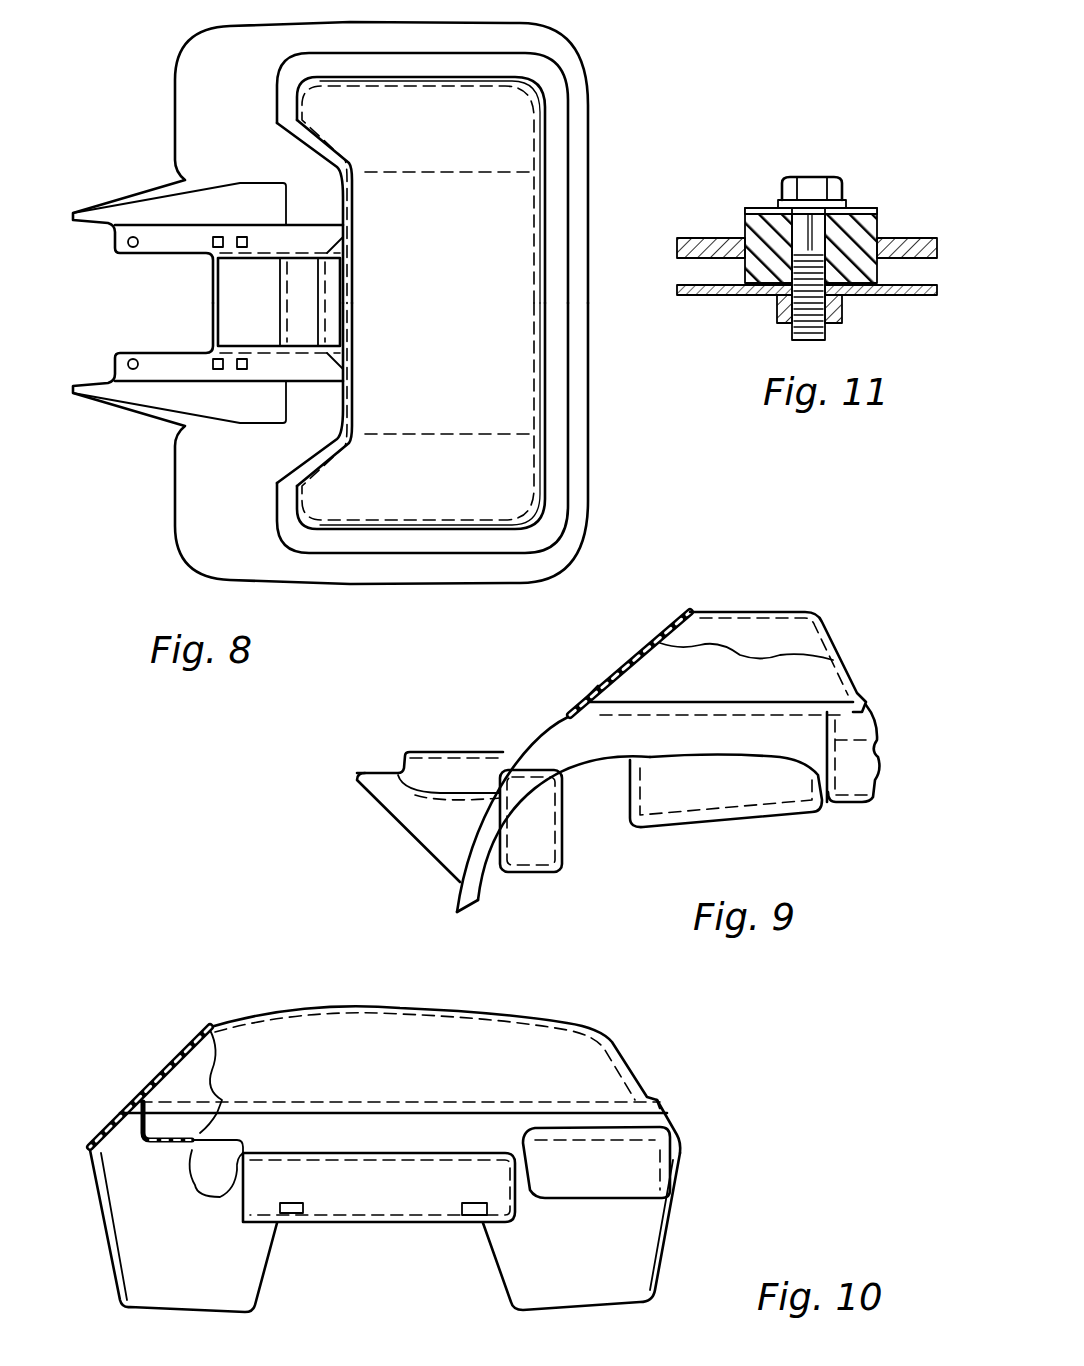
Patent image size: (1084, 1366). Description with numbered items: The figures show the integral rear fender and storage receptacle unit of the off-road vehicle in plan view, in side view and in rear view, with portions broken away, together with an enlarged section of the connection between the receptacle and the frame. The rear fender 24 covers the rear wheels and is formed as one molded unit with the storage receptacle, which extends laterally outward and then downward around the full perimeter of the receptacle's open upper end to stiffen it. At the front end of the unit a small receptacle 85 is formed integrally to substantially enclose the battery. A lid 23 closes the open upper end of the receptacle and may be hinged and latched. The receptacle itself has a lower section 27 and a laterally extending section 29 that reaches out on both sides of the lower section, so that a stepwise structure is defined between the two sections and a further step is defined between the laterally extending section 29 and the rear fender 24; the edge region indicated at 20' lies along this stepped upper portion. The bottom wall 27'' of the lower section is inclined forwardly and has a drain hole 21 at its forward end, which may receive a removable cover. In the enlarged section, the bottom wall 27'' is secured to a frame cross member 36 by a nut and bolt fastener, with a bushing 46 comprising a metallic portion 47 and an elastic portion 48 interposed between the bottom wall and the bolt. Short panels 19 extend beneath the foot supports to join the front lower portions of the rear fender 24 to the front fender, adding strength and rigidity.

In FIG. 10, the short panel 19 is at (145, 1070).
In FIG. 9, the lip of cover 20' is at (870, 724).
In FIG. 10, the drain hole 21 is at (290, 1214).
In FIG. 9, the lid 23 is at (747, 612).
In FIG. 10, the lid 23 is at (303, 1010).
In FIG. 8, the rear fender 24 is at (583, 98).
In FIG. 9, the rear fender 24 is at (877, 760).
In FIG. 10, the rear fender 24 is at (665, 1232).
In FIG. 9, the lower section 27 is at (726, 813).
In FIG. 10, the lower section 27 is at (385, 1207).
In FIG. 11, the bottom wall 27'' is at (805, 216).
In FIG. 9, the bottom wall 27'' is at (605, 762).
In FIG. 10, the bottom wall 27'' is at (379, 1217).
In FIG. 10, the laterally extending section 29 is at (567, 1142).
In FIG. 11, the mounting plate 36 is at (722, 297).
In FIG. 11, the bushing 46 is at (893, 220).
In FIG. 11, the metallic portion 47 is at (860, 208).
In FIG. 11, the elastic portion 48 is at (740, 210).
In FIG. 8, the small receptacle 85 is at (245, 297).
In FIG. 9, the small receptacle 85 is at (567, 840).